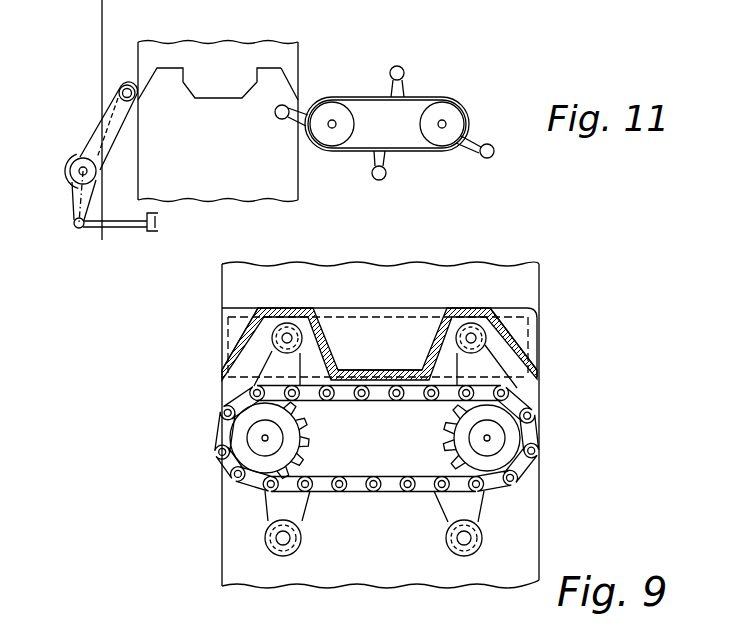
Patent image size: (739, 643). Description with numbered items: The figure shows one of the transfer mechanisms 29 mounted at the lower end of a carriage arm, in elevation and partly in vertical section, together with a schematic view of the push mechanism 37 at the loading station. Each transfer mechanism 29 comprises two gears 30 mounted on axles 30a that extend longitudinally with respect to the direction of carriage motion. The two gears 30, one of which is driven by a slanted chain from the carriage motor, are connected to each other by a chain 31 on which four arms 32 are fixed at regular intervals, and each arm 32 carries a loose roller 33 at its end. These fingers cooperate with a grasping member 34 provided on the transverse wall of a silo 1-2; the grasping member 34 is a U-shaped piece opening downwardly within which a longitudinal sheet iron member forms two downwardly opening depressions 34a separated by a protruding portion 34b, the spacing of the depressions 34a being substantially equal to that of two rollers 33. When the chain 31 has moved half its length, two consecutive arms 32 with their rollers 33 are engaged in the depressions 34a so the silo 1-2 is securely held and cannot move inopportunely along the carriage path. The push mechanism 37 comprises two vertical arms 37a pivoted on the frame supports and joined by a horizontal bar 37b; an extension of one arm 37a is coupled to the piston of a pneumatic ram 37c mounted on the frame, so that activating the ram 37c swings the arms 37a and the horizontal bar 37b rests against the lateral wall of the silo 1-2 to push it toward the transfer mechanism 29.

In FIG. 11, the silos 1-2 is at (273, 178).
In FIG. 9, the silos 1-2 is at (530, 272).
In FIG. 9, the transfer mechanism 29 is at (362, 439).
In FIG. 11, the gears 30 is at (455, 112).
In FIG. 9, the gears 30 is at (292, 424).
In FIG. 9, the axles 30a is at (262, 441).
In FIG. 11, the chain 31 is at (364, 98).
In FIG. 9, the chain 31 is at (358, 483).
In FIG. 9, the arms 32 is at (273, 365).
In FIG. 11, the loose roller 33 is at (405, 70).
In FIG. 9, the loose roller 33 is at (273, 335).
In FIG. 11, the grasping member 34 is at (218, 83).
In FIG. 9, the grasping member 34 is at (392, 330).
In FIG. 11, the depressions 34a is at (271, 73).
In FIG. 9, the depressions 34a is at (296, 305).
In FIG. 9, the protruding portion 34b is at (370, 366).
In FIG. 11, the push mechanism 37 is at (64, 151).
In FIG. 11, the vertical arms 37a is at (112, 123).
In FIG. 11, the horizontal bar 37b is at (126, 85).
In FIG. 11, the pneumatic ram 37c is at (150, 233).